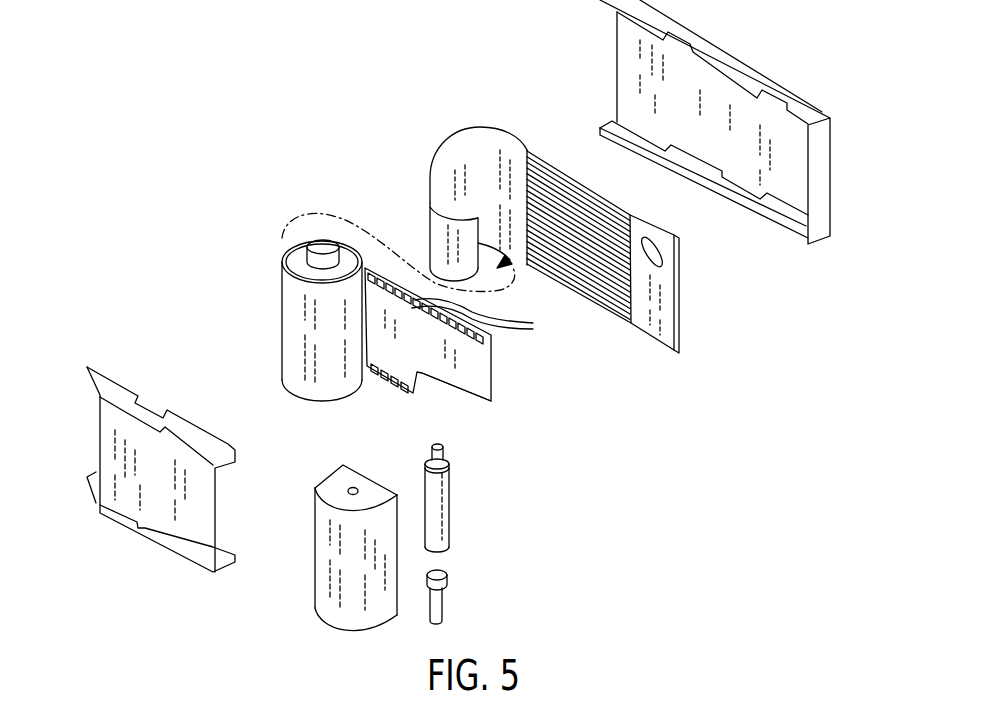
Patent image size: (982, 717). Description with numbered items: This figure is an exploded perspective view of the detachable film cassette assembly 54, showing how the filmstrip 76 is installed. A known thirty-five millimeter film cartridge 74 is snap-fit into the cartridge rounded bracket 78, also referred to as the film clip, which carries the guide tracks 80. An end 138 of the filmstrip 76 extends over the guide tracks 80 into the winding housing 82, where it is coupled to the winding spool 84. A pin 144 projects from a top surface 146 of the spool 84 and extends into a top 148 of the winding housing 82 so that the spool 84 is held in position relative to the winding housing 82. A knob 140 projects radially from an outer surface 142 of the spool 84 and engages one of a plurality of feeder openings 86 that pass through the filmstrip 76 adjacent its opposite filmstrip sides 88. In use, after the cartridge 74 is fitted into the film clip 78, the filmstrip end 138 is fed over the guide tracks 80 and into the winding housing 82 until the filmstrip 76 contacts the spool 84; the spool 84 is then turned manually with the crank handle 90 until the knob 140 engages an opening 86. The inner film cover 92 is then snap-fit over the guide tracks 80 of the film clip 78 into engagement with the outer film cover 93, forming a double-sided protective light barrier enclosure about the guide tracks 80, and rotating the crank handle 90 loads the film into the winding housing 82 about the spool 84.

The detachable film cassette assembly 54 is at (321, 33).
The film cartridge 74 is at (290, 331).
The filmstrip 76 is at (490, 362).
The cartridge rounded bracket 78 is at (467, 133).
The guide tracks 80 is at (594, 307).
The winding housing 82 is at (322, 550).
The winding spool 84 is at (448, 538).
The feeder openings 86 is at (486, 318).
The filmstrip sides 88 is at (369, 268).
The crank handle 90 is at (444, 602).
The inner film cover 92 is at (177, 543).
The outer film cover 93 is at (800, 100).
The filmstrip end 138 is at (478, 385).
The knob 140 is at (447, 500).
The outer surface 142 is at (425, 470).
The pin 144 is at (446, 452).
The top surface 146 is at (449, 463).
The top 148 is at (325, 490).